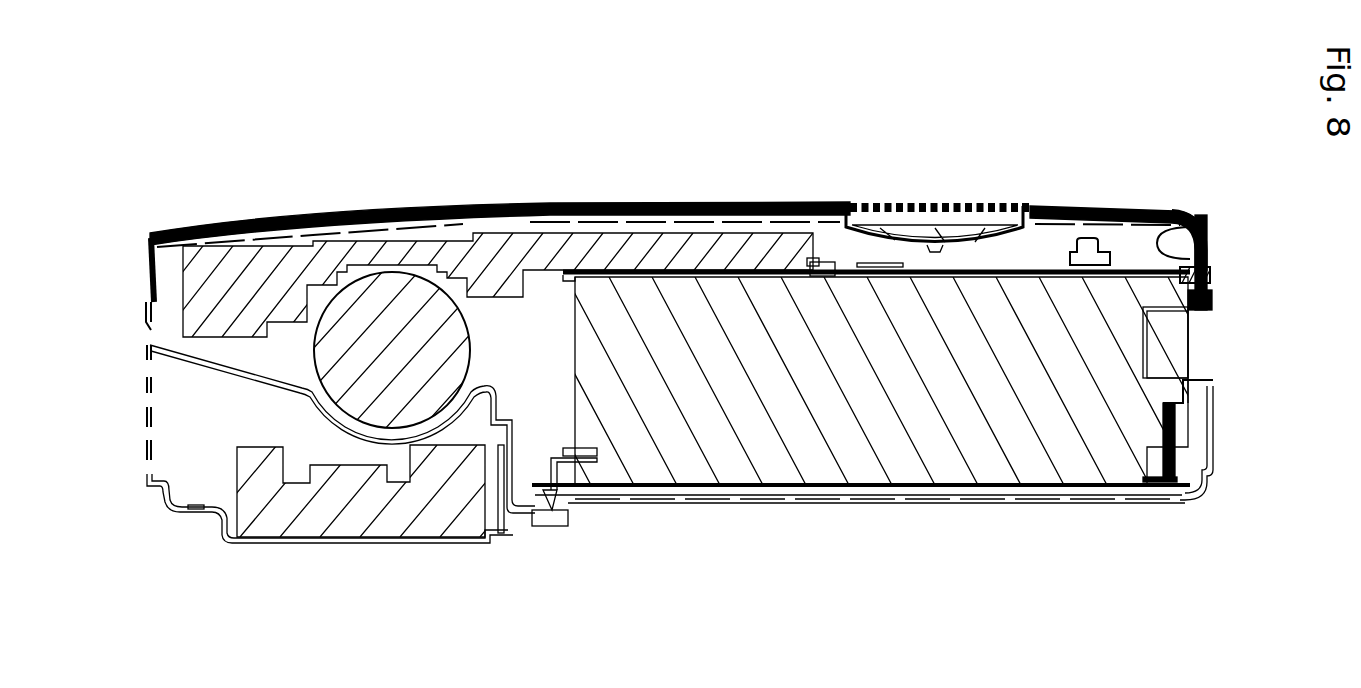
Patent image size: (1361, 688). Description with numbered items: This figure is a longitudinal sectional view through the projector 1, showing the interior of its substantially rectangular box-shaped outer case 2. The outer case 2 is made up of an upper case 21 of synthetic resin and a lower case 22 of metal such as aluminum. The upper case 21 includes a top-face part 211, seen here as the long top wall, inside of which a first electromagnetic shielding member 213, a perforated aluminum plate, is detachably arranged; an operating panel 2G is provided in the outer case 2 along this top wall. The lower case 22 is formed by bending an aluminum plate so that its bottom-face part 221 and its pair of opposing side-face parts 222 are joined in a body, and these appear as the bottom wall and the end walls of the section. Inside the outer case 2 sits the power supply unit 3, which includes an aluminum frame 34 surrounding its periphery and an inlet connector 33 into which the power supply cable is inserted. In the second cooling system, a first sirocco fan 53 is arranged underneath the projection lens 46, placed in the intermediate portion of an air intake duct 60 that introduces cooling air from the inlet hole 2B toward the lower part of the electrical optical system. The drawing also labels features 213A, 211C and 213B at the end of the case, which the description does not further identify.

The projector 1 is at (845, 124).
The outer case 2 is at (672, 204).
The upper case 21 is at (551, 206).
The top-face part 211 is at (800, 205).
The operating panel 2G is at (967, 203).
The power supply unit 3 is at (1042, 302).
The first electromagnetic shielding member 213 is at (1112, 208).
The aluminum frame 34 is at (1165, 214).
The side wall outer surface 213A is at (1228, 198).
The recess 211C is at (1208, 243).
The engaging projection 213B is at (1212, 272).
The inlet connector 33 is at (1212, 306).
The side-face parts 222 is at (1215, 418).
The inlet hole 2B is at (148, 393).
The air intake duct 60 is at (215, 372).
The projection lens 46 is at (445, 348).
The first sirocco fan 53 is at (373, 525).
The lower case 22 is at (750, 505).
The bottom-face part 221 is at (660, 505).